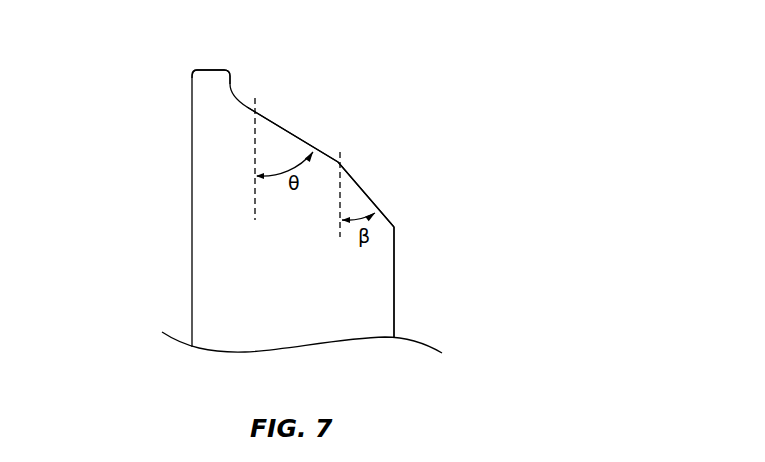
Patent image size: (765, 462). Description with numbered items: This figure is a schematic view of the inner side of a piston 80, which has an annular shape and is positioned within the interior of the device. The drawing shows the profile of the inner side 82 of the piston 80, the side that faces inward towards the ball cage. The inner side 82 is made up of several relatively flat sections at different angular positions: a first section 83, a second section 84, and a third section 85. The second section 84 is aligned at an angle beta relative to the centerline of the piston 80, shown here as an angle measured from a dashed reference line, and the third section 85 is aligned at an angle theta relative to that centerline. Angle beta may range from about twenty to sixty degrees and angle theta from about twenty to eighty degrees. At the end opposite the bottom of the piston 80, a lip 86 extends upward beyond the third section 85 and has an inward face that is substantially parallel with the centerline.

The piston 80 is at (103, 242).
The inner side 82 is at (518, 254).
The first section 83 is at (396, 307).
The second section 84 is at (377, 207).
The third section 85 is at (292, 130).
The lip 86 is at (210, 70).